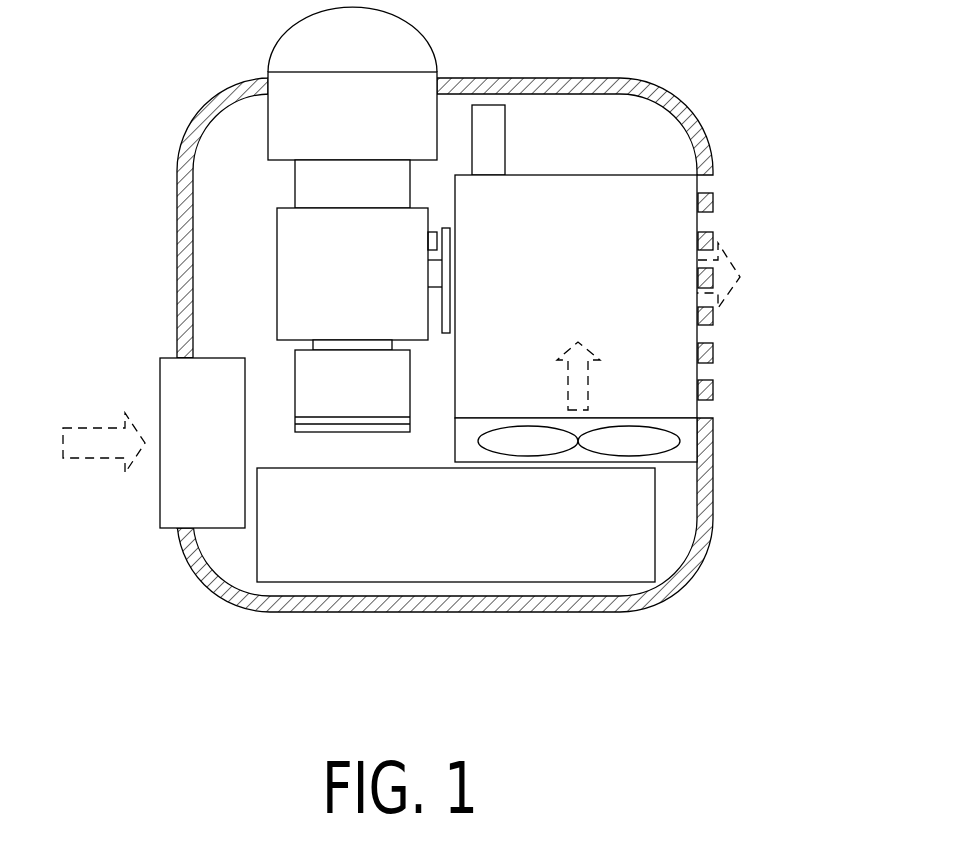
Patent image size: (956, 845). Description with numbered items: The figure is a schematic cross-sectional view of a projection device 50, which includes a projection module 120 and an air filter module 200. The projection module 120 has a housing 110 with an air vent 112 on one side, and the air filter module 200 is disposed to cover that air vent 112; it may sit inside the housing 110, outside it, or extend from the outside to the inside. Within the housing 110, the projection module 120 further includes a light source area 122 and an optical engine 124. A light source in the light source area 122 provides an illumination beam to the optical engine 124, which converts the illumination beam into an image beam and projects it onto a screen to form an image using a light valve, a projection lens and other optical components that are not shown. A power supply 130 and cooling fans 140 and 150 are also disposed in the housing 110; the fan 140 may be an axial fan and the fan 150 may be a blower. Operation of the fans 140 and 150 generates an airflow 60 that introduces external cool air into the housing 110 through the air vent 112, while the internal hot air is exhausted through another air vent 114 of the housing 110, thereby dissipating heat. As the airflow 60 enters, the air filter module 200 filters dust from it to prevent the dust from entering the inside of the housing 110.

The projection device 50 is at (857, 659).
The airflow 60 is at (91, 427).
The housing 110 is at (183, 192).
The air vent 112 is at (168, 357).
The air vent 114 is at (722, 222).
The projection module 120 is at (192, 77).
The light source area 122 is at (648, 195).
The optical engine 124 is at (353, 445).
The power supply 130 is at (647, 513).
The cooling fan 140 is at (688, 443).
The cooling fan 150 is at (488, 117).
The air filter module 200 is at (160, 498).